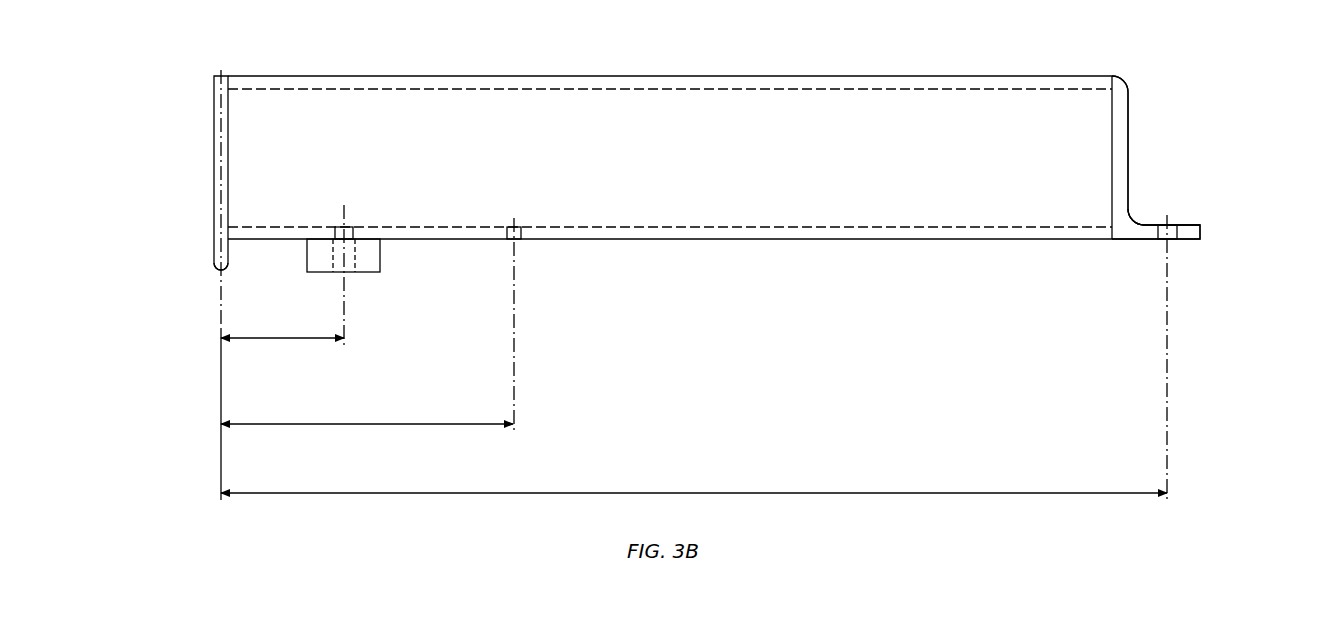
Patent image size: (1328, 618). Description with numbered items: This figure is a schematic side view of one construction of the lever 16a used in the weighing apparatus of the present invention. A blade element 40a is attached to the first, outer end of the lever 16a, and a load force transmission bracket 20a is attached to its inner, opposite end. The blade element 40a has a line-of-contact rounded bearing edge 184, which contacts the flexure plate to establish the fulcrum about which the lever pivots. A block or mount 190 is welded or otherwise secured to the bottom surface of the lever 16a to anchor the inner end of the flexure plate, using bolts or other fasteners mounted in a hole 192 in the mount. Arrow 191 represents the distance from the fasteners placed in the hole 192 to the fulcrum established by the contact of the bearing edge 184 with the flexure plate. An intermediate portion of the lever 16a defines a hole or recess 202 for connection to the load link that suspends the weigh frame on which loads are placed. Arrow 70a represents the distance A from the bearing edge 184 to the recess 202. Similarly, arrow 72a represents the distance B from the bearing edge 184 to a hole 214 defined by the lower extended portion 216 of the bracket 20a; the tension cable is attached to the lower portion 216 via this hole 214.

The lever 16a is at (770, 166).
The bracket 20a is at (1132, 80).
The blade element 40a is at (213, 209).
The bearing edge 184 is at (211, 275).
The block or mount 190 is at (303, 253).
The arrow 191 is at (290, 345).
The hole 192 is at (362, 248).
The hole or recess 202 is at (528, 240).
The hole 214 is at (1179, 228).
The lower extended portion 216 is at (1140, 244).
The arrow 70a is at (343, 428).
The arrow 72a is at (714, 475).